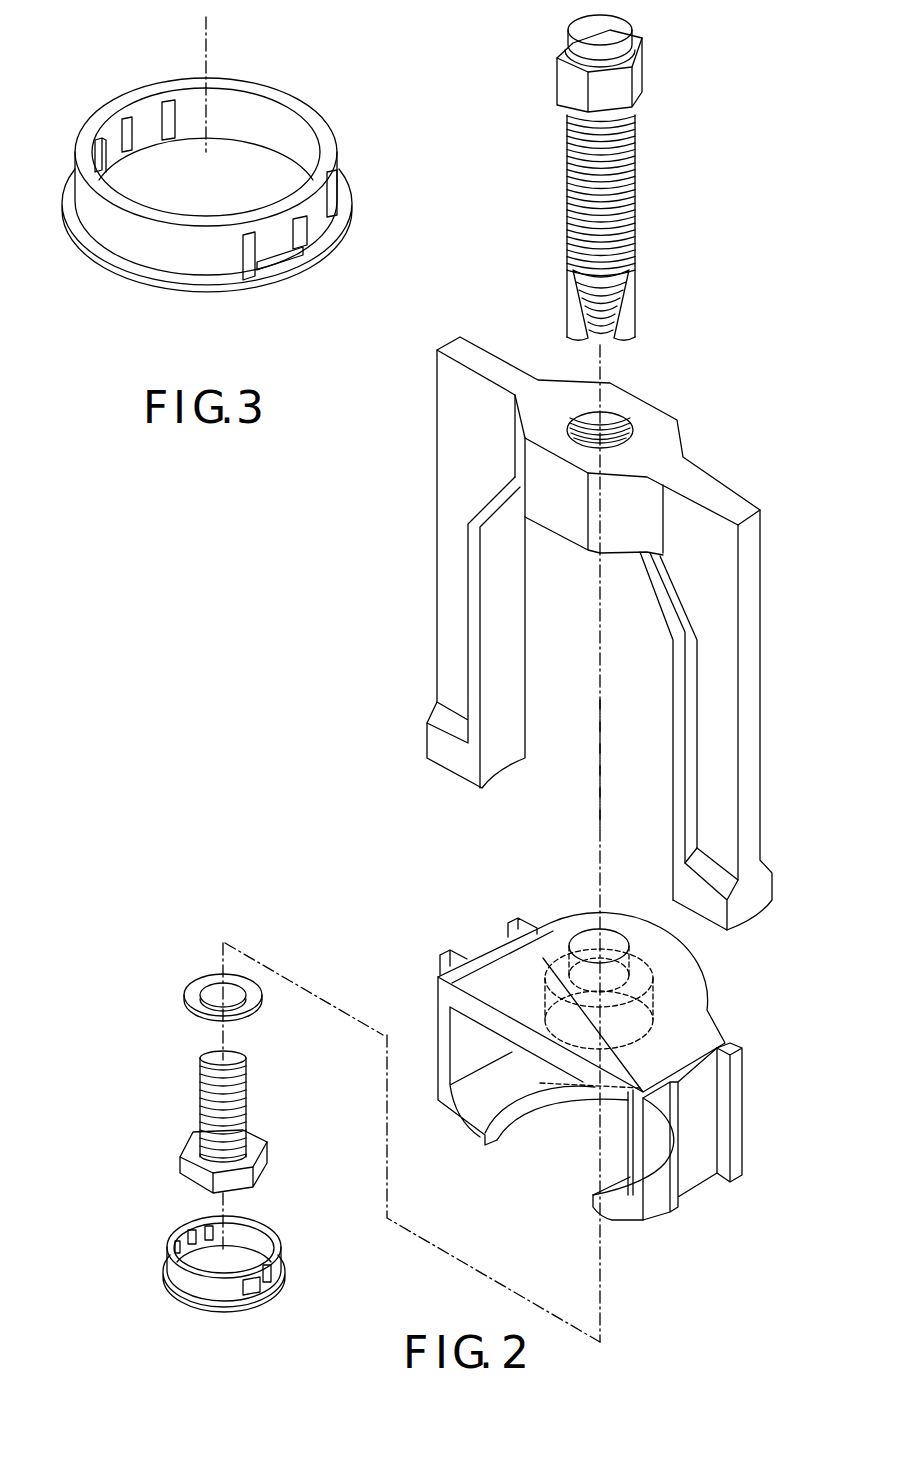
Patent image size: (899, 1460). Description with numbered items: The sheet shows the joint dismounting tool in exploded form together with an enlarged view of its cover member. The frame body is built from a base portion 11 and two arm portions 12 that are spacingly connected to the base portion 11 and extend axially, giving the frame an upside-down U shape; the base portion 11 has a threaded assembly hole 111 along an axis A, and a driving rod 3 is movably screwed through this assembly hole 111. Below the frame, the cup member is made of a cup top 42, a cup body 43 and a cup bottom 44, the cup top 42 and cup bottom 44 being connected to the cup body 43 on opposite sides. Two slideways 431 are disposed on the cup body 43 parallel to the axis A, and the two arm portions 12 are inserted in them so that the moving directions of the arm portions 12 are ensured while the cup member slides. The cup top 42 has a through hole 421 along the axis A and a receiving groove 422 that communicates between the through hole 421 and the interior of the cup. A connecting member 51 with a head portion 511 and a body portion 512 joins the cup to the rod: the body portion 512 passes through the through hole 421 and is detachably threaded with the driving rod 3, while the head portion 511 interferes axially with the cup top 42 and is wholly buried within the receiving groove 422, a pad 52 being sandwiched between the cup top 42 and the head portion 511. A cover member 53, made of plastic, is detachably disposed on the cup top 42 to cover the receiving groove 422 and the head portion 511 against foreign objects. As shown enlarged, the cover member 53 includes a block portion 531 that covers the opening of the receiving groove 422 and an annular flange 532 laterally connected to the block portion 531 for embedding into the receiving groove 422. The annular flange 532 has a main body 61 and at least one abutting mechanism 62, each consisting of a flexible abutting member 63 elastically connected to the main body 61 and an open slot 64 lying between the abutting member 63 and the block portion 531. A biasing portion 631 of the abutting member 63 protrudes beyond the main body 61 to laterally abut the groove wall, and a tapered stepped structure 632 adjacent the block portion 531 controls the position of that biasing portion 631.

In FIG. 2, the driving rod 3 is at (625, 210).
In FIG. 2, the base portion 11 is at (605, 446).
In FIG. 2, the assembly hole 111 is at (617, 422).
In FIG. 2, the arm portions 12 is at (715, 578).
In FIG. 2, the axis A is at (597, 763).
In FIG. 2, the cup top 42 is at (627, 969).
In FIG. 2, the through hole 421 is at (585, 942).
In FIG. 2, the receiving groove 422 is at (645, 1029).
In FIG. 2, the cup body 43 is at (450, 1027).
In FIG. 2, the slideways 431 is at (724, 1115).
In FIG. 2, the cup bottom 44 is at (684, 1180).
In FIG. 2, the connecting member 51 is at (157, 1121).
In FIG. 2, the head portion 511 is at (182, 1161).
In FIG. 2, the body portion 512 is at (207, 1097).
In FIG. 2, the pad 52 is at (197, 985).
In FIG. 2, the cover member 53 is at (247, 1305).
In FIG. 3, the block portion 531 is at (113, 262).
In FIG. 3, the annular flange 532 is at (218, 195).
In FIG. 3, the main body 61 is at (192, 250).
In FIG. 2, the abutting mechanism 62 is at (265, 1305).
In FIG. 2, the abutting member 63 is at (282, 1277).
In FIG. 3, the biasing portion 631 is at (283, 233).
In FIG. 3, the stepped structure 632 is at (272, 256).
In FIG. 3, the open slot 64 is at (242, 268).